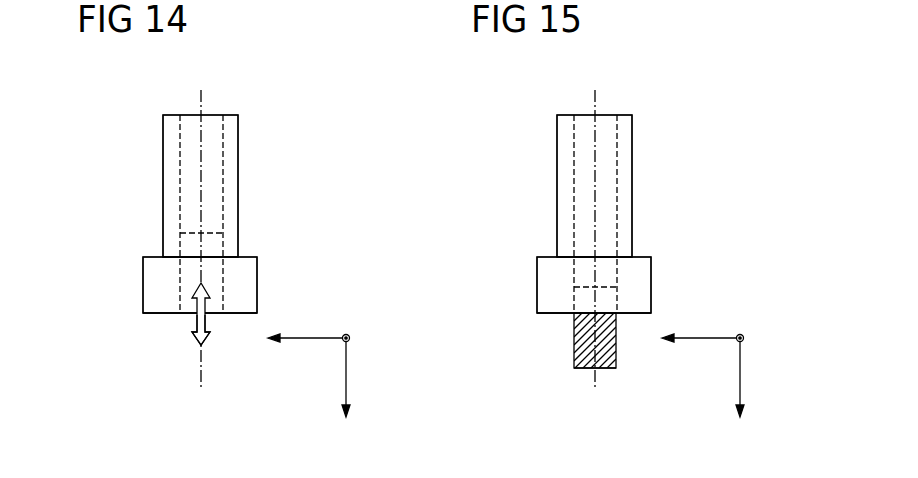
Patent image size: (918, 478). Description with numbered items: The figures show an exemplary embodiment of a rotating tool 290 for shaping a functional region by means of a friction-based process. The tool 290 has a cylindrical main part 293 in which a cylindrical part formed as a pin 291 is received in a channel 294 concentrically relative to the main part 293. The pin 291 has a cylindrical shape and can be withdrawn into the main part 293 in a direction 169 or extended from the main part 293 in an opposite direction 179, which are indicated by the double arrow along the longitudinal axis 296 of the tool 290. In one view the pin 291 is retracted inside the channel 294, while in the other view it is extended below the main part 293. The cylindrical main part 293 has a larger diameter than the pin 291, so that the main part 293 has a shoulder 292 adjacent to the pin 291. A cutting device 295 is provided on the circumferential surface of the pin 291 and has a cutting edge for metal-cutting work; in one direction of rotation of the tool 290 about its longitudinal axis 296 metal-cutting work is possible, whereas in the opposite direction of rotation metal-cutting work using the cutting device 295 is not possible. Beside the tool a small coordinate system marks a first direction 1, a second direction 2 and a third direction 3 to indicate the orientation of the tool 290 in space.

In FIG. 14, the rotating tool 290 is at (270, 151).
In FIG. 15, the rotating tool 290 is at (654, 204).
In FIG. 14, the channel 294 is at (180, 171).
In FIG. 15, the channel 294 is at (558, 214).
In FIG. 14, the pin 291 is at (212, 236).
In FIG. 15, the pin 291 is at (631, 352).
In FIG. 14, the cylindrical main part 293 is at (150, 290).
In FIG. 15, the cylindrical main part 293 is at (554, 285).
In FIG. 14, the shoulder 292 is at (250, 314).
In FIG. 15, the shoulder 292 is at (579, 352).
In FIG. 14, the direction 169 is at (196, 291).
In FIG. 14, the direction 179 is at (200, 346).
In FIG. 14, the longitudinal axis 296 is at (200, 378).
In FIG. 15, the cutting device 295 is at (583, 403).
In FIG. 14, the first direction (axis 1) 1 is at (350, 383).
In FIG. 15, the first direction (axis 1) 1 is at (760, 379).
In FIG. 14, the second direction (axis 2) 2 is at (349, 335).
In FIG. 15, the second direction (axis 2) 2 is at (753, 314).
In FIG. 14, the third direction (axis 3) 3 is at (308, 337).
In FIG. 15, the third direction (axis 3) 3 is at (699, 314).